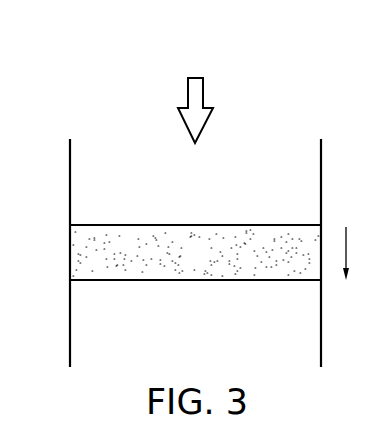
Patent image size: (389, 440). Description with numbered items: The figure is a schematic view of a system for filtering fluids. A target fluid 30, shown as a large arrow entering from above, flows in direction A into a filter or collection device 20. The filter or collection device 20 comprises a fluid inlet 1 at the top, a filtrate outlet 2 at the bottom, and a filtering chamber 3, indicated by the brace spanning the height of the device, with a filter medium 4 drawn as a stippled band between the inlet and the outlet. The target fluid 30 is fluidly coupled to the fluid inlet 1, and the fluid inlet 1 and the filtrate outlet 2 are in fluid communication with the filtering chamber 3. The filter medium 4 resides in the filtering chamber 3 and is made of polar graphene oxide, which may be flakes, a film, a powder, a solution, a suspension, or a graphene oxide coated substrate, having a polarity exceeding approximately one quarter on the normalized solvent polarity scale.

The filter or collection device 20 is at (311, 90).
The target fluid 30 is at (203, 93).
The filtering chamber 3 is at (61, 140).
The fluid inlet 1 is at (203, 197).
The filtrate outlet 2 is at (203, 331).
The filter medium 4 is at (203, 265).